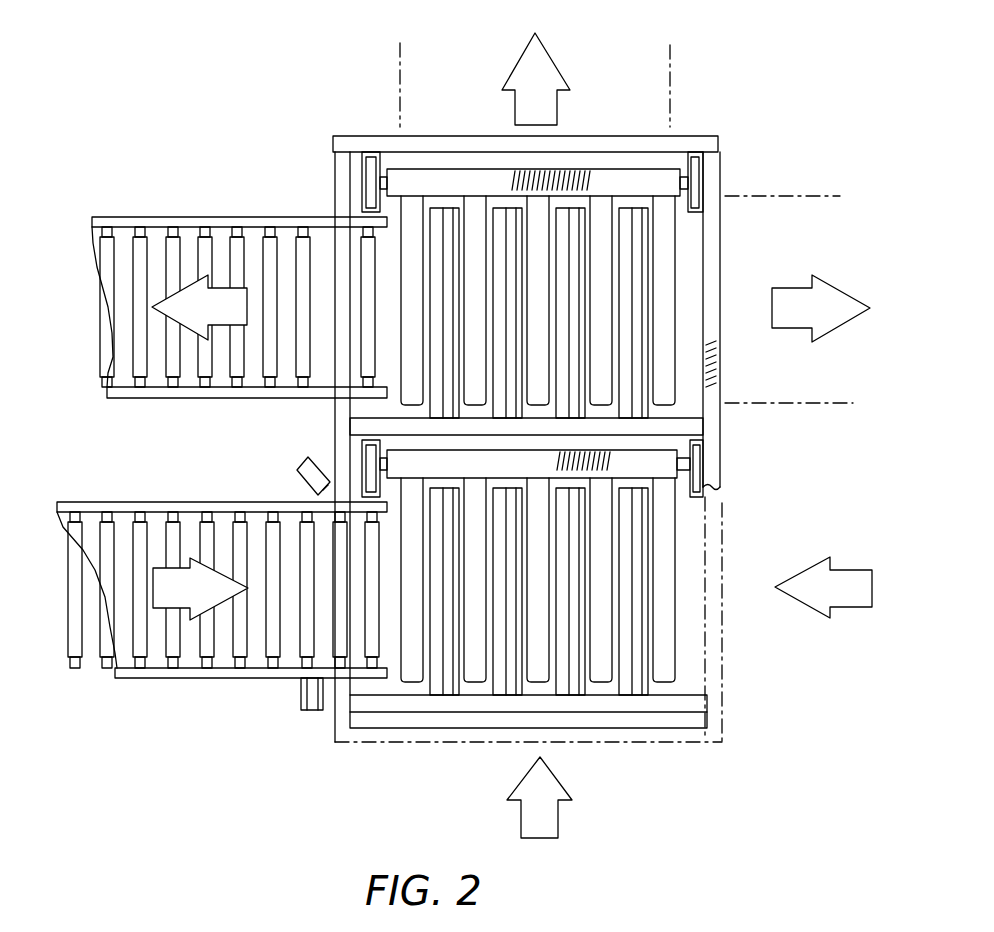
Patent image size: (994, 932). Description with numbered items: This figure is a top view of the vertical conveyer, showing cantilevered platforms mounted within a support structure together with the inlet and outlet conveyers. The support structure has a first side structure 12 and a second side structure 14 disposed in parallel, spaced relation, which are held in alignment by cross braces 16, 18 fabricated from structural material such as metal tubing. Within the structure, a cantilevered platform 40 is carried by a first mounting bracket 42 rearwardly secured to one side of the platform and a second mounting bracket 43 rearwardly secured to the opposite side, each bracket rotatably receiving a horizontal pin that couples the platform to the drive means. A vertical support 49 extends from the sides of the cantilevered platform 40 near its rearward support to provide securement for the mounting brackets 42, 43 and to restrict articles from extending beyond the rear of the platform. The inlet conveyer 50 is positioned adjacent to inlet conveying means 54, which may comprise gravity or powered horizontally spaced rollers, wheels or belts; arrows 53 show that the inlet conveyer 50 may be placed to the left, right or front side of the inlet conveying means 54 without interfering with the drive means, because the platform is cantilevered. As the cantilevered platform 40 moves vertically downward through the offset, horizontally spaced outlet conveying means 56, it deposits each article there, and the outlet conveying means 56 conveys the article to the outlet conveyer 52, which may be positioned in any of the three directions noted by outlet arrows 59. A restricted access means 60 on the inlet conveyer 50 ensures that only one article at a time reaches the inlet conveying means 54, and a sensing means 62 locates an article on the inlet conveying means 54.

The first side structure 12 is at (357, 180).
The second side structure 14 is at (703, 184).
The cross brace 16 is at (684, 136).
The cross brace 18 is at (641, 733).
The cantilevered platform 40 is at (413, 223).
The first mounting bracket 42 is at (393, 152).
The second mounting bracket 43 is at (694, 150).
The vertical support 49 is at (476, 180).
The inlet conveyer 50 is at (168, 678).
The outlet conveyer 52 is at (226, 217).
The arrows 53 is at (857, 577).
The inlet conveying means 54 is at (447, 650).
The outlet conveying means 56 is at (447, 383).
The outlet arrows 59 is at (552, 78).
The restricted access means 60 is at (300, 703).
The sensing means 62 is at (297, 473).